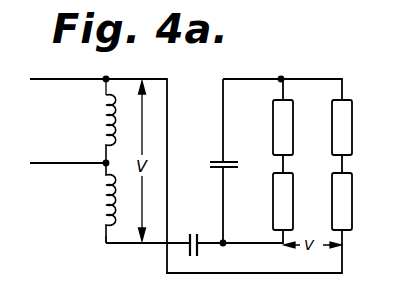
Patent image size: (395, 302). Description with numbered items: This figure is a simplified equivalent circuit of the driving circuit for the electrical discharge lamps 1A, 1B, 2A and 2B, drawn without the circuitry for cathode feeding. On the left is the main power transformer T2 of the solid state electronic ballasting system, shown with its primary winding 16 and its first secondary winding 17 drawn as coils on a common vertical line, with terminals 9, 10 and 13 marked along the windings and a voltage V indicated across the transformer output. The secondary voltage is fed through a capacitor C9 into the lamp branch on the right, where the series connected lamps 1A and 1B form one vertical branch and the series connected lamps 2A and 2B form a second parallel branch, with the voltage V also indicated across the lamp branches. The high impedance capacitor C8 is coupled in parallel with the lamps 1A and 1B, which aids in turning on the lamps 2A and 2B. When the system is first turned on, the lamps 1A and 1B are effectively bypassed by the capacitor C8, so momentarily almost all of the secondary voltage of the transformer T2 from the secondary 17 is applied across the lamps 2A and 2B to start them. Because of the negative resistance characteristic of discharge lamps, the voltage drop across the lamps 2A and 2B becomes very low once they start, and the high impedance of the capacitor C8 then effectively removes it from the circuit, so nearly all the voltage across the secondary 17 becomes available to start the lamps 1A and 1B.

The transformer secondary terminal 9 is at (98, 87).
The transformer center tap terminal 10 is at (96, 156).
The transformer secondary terminal 13 is at (94, 239).
The primary winding 16 is at (100, 121).
The first secondary winding 17 is at (100, 200).
The main power transformer T2 is at (104, 247).
The high impedance capacitor C8 is at (216, 154).
The capacitor C9 is at (203, 237).
The electrical discharge lamp 1A is at (283, 127).
The electrical discharge lamp 1B is at (283, 192).
The electrical discharge lamp 2A is at (342, 127).
The electrical discharge lamp 2B is at (342, 192).